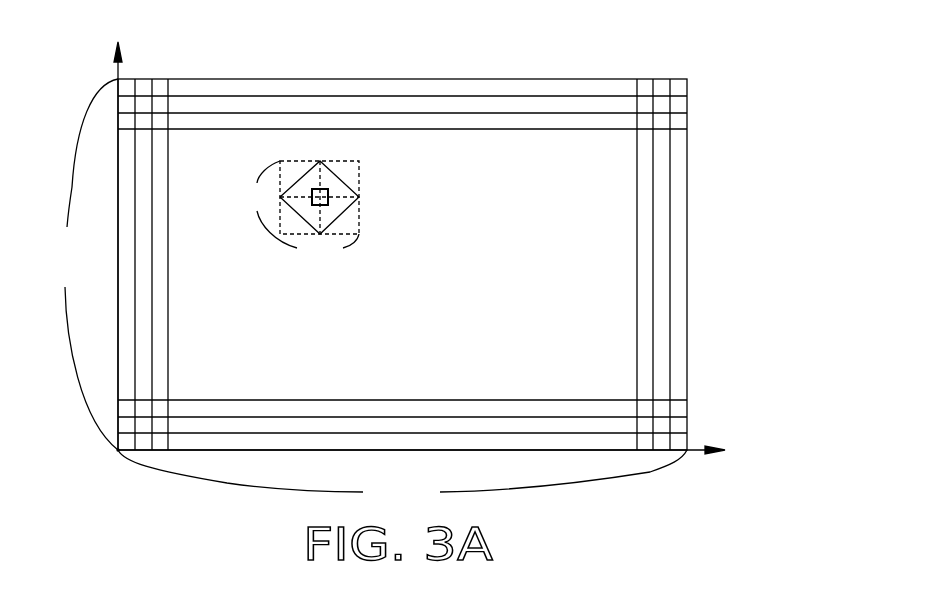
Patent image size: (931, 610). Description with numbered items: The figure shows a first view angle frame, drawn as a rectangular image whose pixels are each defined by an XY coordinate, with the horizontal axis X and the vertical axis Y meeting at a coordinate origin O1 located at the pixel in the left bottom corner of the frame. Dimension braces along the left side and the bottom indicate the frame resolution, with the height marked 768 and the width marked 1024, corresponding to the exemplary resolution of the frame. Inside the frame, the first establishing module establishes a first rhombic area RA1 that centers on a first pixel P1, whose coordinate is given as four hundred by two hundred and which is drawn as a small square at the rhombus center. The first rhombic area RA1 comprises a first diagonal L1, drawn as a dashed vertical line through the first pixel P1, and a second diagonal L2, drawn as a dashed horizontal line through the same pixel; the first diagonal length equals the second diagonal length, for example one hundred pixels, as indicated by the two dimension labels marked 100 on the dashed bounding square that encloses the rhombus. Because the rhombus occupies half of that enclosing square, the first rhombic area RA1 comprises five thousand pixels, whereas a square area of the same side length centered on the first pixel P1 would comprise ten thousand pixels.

The first rhombic area RA1 is at (302, 177).
The first pixel P1 is at (325, 187).
The first diagonal L1 is at (320, 212).
The second diagonal L2 is at (335, 193).
The region dimension 100 pixels 100 is at (293, 212).
The image height 768 pixels 768 is at (81, 264).
The image width 1024 pixels 1024 is at (402, 478).
The coordinate origin O1 is at (98, 466).
The X axis X is at (421, 466).
The Y axis Y is at (102, 243).